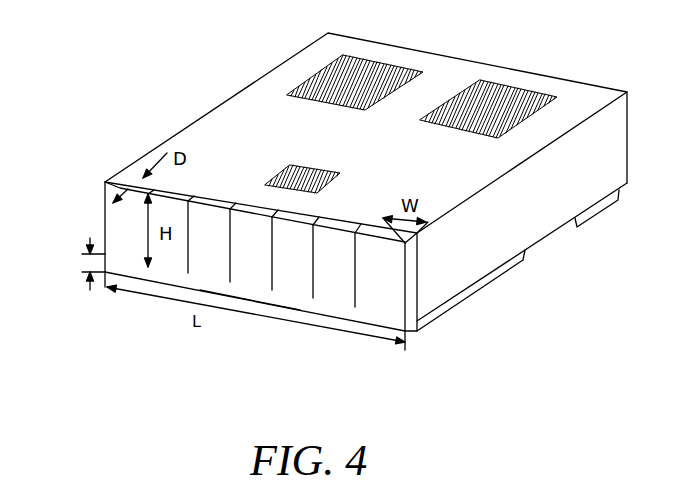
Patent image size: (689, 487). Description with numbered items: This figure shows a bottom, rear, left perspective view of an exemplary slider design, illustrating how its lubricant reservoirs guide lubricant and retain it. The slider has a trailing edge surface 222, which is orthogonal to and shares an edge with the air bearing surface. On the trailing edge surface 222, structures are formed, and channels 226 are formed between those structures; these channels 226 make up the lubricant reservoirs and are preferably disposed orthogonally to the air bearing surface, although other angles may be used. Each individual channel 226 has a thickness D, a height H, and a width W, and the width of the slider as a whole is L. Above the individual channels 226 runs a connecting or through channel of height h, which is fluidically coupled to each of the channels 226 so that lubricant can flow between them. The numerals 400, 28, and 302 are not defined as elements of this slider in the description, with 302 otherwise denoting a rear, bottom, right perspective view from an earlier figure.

The heat sink 400 is at (223, 402).
The trailing edge surface 222 is at (117, 217).
The heat sink body 28 is at (120, 263).
The channels 226 is at (147, 255).
The rear, bottom, right perspective 302 is at (532, 213).